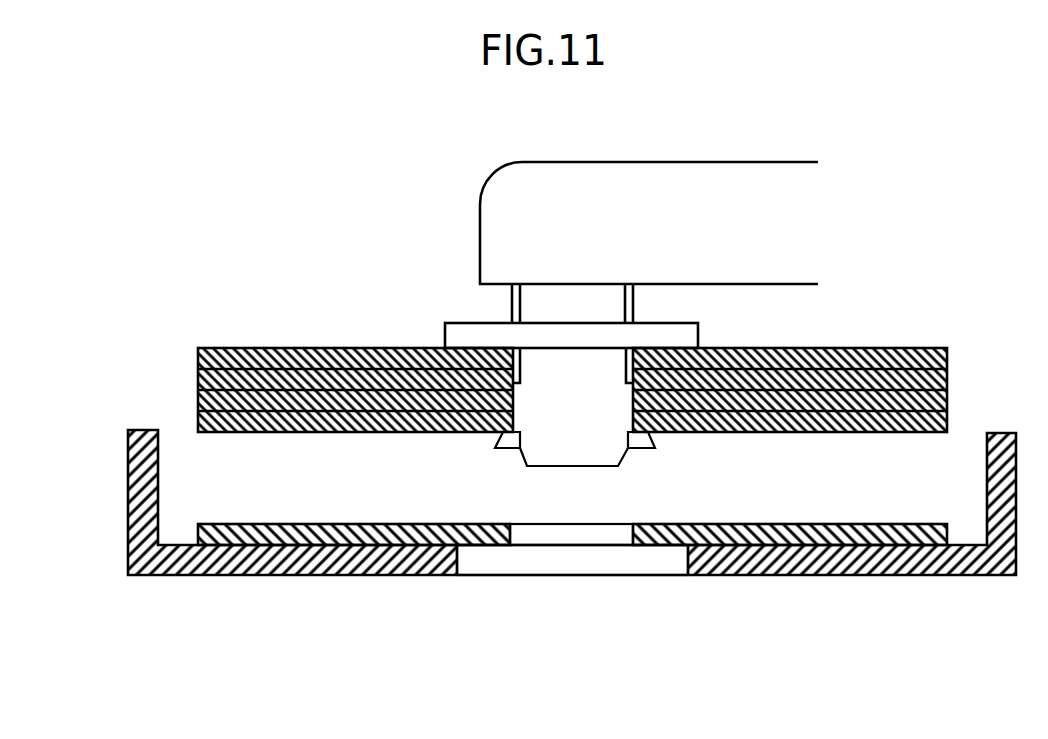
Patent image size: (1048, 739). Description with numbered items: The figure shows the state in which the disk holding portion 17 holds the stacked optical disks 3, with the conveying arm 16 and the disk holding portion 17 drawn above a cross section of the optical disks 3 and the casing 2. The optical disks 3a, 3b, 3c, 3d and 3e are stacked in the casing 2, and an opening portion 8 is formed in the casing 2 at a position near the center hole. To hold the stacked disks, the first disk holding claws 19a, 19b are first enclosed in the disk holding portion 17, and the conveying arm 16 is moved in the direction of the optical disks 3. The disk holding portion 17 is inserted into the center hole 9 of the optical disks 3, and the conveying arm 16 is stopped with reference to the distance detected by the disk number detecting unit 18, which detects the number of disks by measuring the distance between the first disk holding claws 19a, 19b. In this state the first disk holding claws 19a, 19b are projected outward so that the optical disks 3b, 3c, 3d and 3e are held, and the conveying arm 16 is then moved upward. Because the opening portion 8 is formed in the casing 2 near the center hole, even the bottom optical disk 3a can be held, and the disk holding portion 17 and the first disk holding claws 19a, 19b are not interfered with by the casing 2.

The casing 2 is at (253, 576).
The optical disks 3 is at (490, 316).
The optical disk 3a is at (162, 576).
The optical disk 3b is at (511, 405).
The optical disk 3c is at (262, 404).
The optical disk 3d is at (258, 382).
The optical disk 3e is at (253, 350).
The opening portion 8 is at (598, 564).
The center hole 9 is at (585, 535).
The conveying arm 16 is at (510, 225).
The disk holding portion 17 is at (547, 307).
The disk number detecting unit 18 is at (462, 343).
The first disk holding claw 19a is at (496, 449).
The first disk holding claw 19b is at (652, 450).